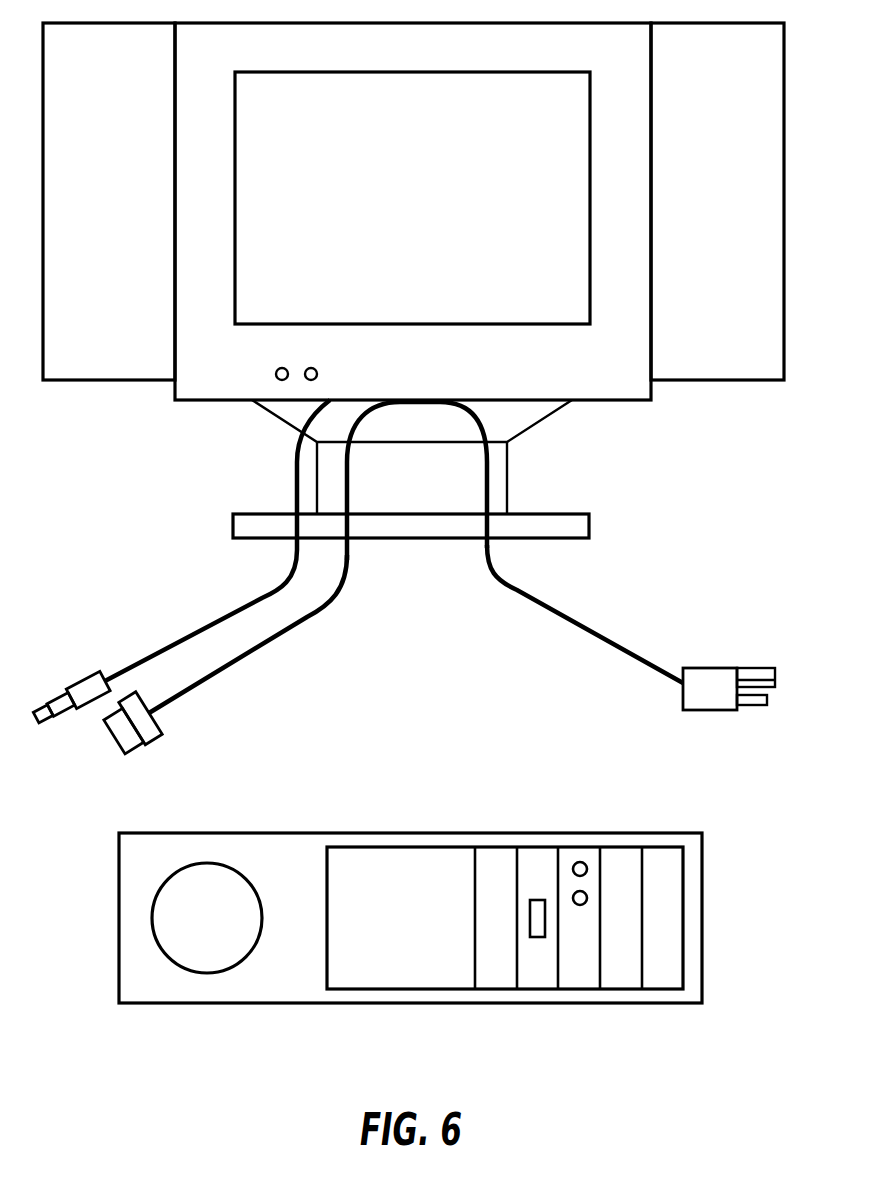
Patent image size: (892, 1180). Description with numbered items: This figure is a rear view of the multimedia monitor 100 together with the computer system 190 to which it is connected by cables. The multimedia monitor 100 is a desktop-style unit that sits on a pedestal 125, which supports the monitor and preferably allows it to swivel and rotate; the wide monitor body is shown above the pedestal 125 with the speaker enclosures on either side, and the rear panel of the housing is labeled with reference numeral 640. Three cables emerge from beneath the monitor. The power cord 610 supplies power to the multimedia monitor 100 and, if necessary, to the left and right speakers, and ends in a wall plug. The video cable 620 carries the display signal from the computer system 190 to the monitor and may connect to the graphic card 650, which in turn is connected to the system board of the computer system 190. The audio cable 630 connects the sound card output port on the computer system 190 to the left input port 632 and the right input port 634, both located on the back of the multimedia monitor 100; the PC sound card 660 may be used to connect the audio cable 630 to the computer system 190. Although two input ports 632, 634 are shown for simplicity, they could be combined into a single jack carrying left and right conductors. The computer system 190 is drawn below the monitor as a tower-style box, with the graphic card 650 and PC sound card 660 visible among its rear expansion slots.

The multimedia monitor 100 is at (413, 268).
The pedestal 125 is at (379, 551).
The display screen 640 is at (443, 213).
The left input port 632 is at (242, 356).
The right input port 634 is at (349, 356).
The audio cable 630 is at (180, 563).
The video cable 620 is at (293, 579).
The power cord 610 is at (631, 627).
The computer system 190 is at (460, 918).
The graphic card 650 is at (494, 861).
The PC sound card 660 is at (625, 845).